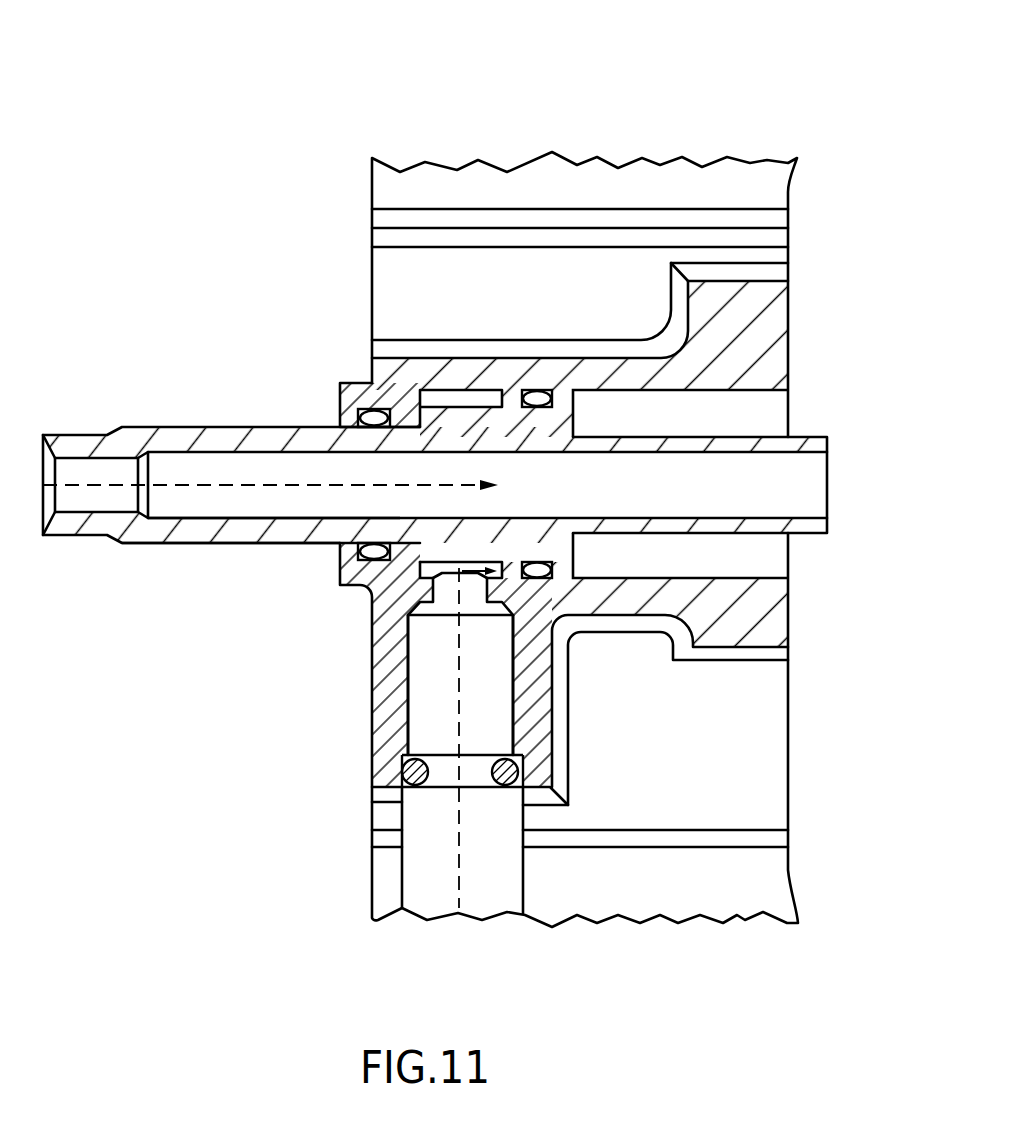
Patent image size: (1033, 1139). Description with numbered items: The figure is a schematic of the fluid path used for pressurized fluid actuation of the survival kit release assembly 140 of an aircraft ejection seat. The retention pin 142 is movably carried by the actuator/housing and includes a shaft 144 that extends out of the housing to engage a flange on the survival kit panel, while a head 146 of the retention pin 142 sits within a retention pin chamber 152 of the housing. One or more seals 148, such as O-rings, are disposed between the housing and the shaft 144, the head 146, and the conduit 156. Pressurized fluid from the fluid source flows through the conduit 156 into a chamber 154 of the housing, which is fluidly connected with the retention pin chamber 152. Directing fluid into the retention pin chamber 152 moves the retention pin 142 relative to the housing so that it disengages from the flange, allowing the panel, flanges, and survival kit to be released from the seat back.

The release assembly 140 is at (753, 102).
The retention pin 142 is at (175, 400).
The shaft 144 is at (173, 544).
The head 146 is at (573, 553).
The seal 148 is at (532, 392).
The retention pin chamber 152 is at (727, 413).
The chamber 154 is at (425, 670).
The conduit 156 is at (402, 873).